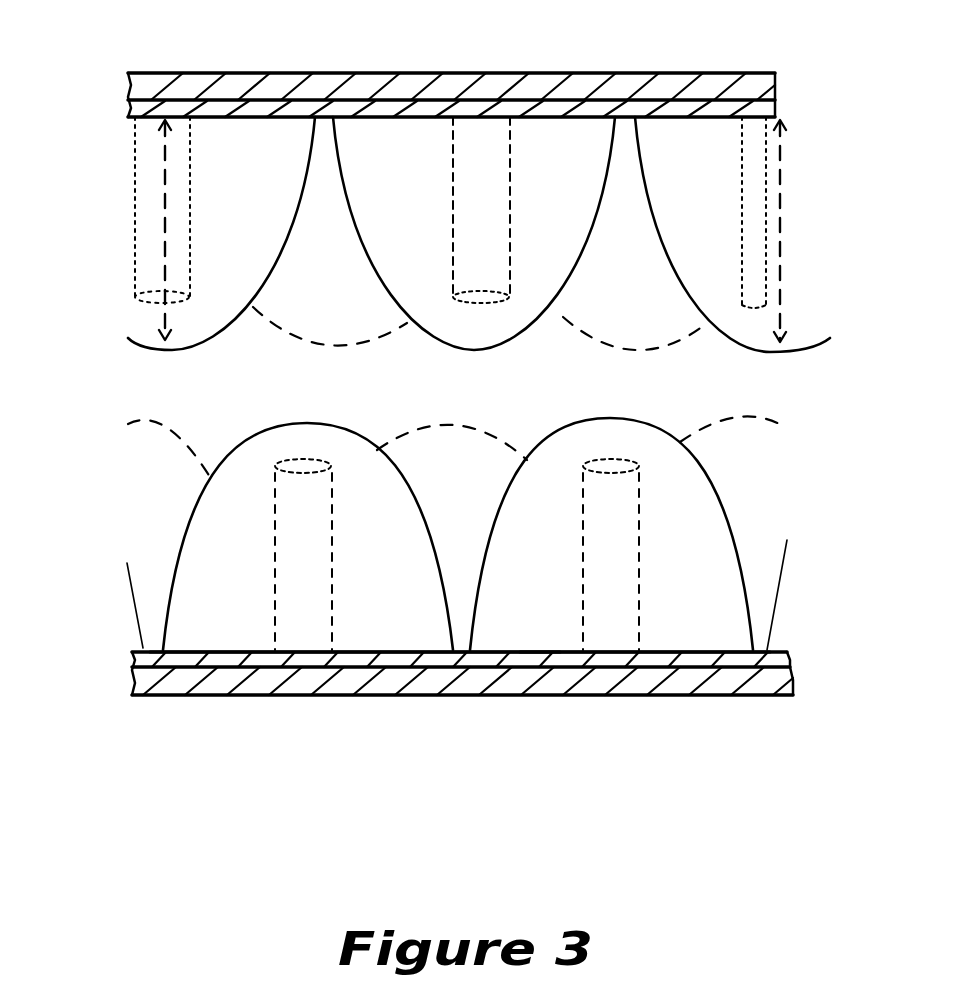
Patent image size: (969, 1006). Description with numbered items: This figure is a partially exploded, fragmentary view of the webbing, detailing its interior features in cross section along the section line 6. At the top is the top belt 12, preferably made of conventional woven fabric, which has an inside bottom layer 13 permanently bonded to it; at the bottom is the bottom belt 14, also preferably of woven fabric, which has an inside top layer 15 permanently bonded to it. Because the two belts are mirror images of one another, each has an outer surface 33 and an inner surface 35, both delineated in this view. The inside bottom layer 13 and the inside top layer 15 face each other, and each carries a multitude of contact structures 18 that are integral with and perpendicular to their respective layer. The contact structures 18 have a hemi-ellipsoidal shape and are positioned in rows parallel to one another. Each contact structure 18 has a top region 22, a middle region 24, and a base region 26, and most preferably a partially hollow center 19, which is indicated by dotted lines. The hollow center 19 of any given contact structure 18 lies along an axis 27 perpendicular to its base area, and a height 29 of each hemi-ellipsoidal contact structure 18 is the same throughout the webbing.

The section line 6 is at (128, 652).
The top belt 12 is at (453, 80).
The inside bottom layer 13 is at (823, 88).
The bottom belt 14 is at (244, 690).
The inside top layer 15 is at (393, 639).
The contact structure 18 is at (252, 463).
The partially hollow center 19 is at (607, 545).
The top region 22 is at (607, 442).
The middle region 24 is at (550, 542).
The base region 26 is at (538, 645).
The axis 27 is at (167, 213).
The height 29 is at (782, 256).
The outer surface 33 is at (687, 63).
The inner surface 35 is at (708, 115).